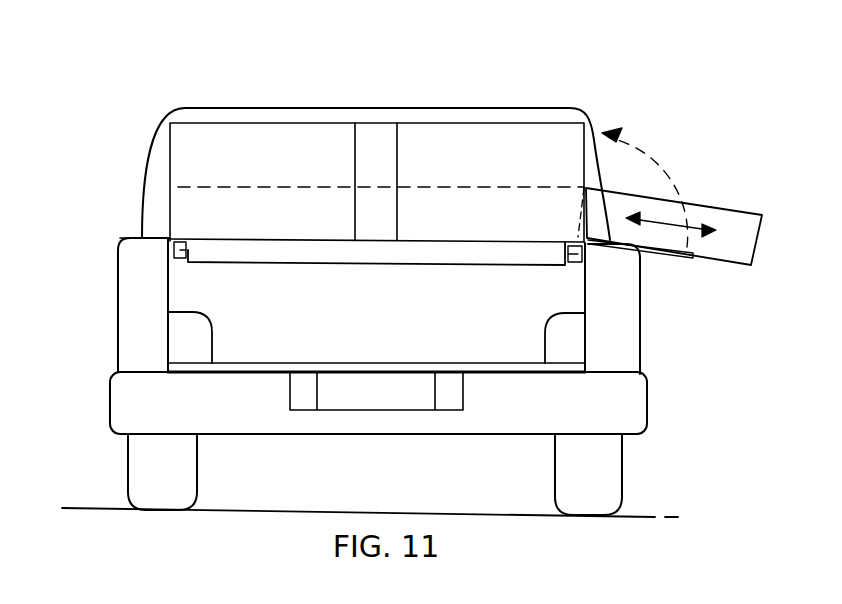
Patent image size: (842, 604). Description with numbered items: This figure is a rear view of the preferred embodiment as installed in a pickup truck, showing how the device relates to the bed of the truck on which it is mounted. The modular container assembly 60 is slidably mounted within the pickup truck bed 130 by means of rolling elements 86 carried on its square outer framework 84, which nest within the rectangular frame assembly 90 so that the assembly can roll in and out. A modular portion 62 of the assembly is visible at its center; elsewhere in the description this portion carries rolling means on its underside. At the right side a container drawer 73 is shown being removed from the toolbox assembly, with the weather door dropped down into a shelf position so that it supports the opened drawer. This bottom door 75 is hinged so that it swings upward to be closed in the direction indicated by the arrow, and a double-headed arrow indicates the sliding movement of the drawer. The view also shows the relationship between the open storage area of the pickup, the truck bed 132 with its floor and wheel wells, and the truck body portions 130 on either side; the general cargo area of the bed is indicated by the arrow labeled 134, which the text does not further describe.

The modular container assembly 60 is at (252, 114).
The modular portion 62 is at (372, 138).
The container drawer 73 is at (723, 207).
The bottom door 75 is at (670, 262).
The square outer framework 84 is at (322, 253).
The rolling elements 86 is at (167, 248).
The rectangular frame assembly 90 is at (178, 263).
The truck body portions 130 is at (133, 295).
The truck bed 132 is at (585, 338).
The cargo area access direction 134 is at (278, 320).